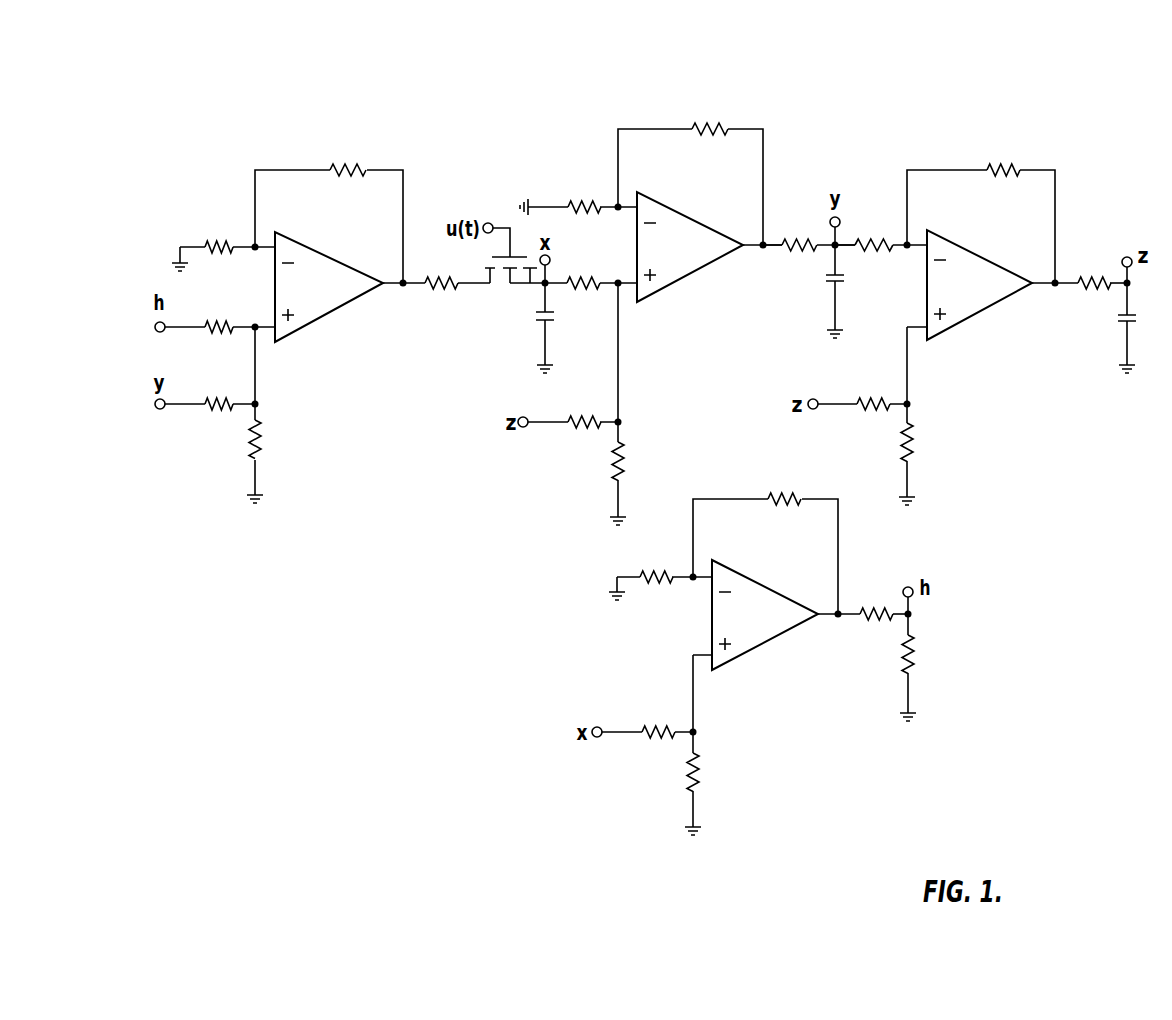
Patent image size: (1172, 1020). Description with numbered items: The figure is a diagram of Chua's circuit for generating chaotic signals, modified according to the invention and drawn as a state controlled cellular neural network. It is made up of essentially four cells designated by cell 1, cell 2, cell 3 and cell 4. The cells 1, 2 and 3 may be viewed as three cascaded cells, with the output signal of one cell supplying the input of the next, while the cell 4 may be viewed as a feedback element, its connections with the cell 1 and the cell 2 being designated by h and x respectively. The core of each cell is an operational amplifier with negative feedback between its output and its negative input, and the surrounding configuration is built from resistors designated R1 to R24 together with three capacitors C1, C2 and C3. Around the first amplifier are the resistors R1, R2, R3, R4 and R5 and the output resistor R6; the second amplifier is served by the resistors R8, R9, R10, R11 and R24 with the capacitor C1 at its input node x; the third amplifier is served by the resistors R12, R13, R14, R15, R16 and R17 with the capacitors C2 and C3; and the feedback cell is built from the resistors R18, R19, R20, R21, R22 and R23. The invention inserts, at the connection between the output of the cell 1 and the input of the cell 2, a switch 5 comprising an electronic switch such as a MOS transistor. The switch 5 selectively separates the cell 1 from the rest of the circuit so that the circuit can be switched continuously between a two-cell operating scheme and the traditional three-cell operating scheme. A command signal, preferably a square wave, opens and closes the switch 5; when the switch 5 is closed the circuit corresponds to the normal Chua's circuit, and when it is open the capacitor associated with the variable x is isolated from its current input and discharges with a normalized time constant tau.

The cell 1 is at (353, 335).
The cell 2 is at (700, 297).
The cell 3 is at (1007, 330).
The cell 4 is at (768, 667).
The switch 5 is at (488, 207).
The resistor R1 is at (208, 221).
The resistor R2 is at (241, 323).
The resistor R3 is at (207, 378).
The resistor R4 is at (262, 450).
The resistor R5 is at (366, 162).
The resistor R6 is at (452, 255).
The resistor R8 is at (597, 255).
The resistor R9 is at (567, 390).
The resistor R10 is at (626, 472).
The resistor R11 is at (728, 121).
The resistor R12 is at (813, 242).
The resistor R13 is at (893, 242).
The resistor R14 is at (861, 374).
The resistor R15 is at (919, 452).
The resistor R16 is at (1023, 161).
The resistor R17 is at (1076, 252).
The resistor R18 is at (660, 573).
The resistor R19 is at (642, 722).
The resistor R20 is at (699, 782).
The resistor R21 is at (801, 488).
The resistor R22 is at (883, 607).
The resistor R23 is at (898, 656).
The resistor R24 is at (590, 204).
The capacitor C1 is at (553, 322).
The capacitor C2 is at (830, 288).
The capacitor C3 is at (1139, 316).